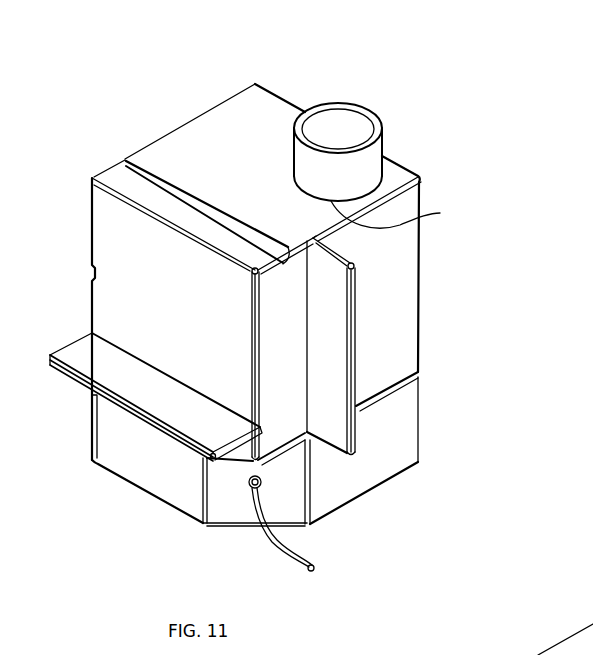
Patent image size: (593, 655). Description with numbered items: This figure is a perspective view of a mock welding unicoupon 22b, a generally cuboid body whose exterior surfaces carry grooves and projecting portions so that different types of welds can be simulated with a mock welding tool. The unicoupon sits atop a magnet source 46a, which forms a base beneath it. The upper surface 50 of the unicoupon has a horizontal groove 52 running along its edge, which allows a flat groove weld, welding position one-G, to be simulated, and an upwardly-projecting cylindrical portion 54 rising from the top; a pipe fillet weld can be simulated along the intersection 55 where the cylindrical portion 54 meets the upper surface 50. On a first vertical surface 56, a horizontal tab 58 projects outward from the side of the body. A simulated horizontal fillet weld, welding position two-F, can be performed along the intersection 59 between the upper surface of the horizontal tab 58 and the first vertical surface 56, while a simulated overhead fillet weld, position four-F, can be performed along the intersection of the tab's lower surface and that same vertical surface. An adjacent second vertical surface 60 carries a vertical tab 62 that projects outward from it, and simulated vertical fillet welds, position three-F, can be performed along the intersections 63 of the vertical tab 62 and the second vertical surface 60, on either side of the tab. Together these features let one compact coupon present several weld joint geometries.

The mock welding unicoupon 22b is at (170, 76).
The magnet source 46a is at (422, 425).
The upper surface 50 is at (235, 157).
The horizontal groove 52 is at (125, 158).
The cylindrical portion 54 is at (350, 108).
The intersection 55 is at (396, 214).
The first vertical surface 56 is at (187, 298).
The horizontal tab 58 is at (72, 337).
The intersection 59 is at (160, 373).
The second vertical surface 60 is at (391, 262).
The vertical tab 62 is at (357, 452).
The intersections 63 is at (307, 393).